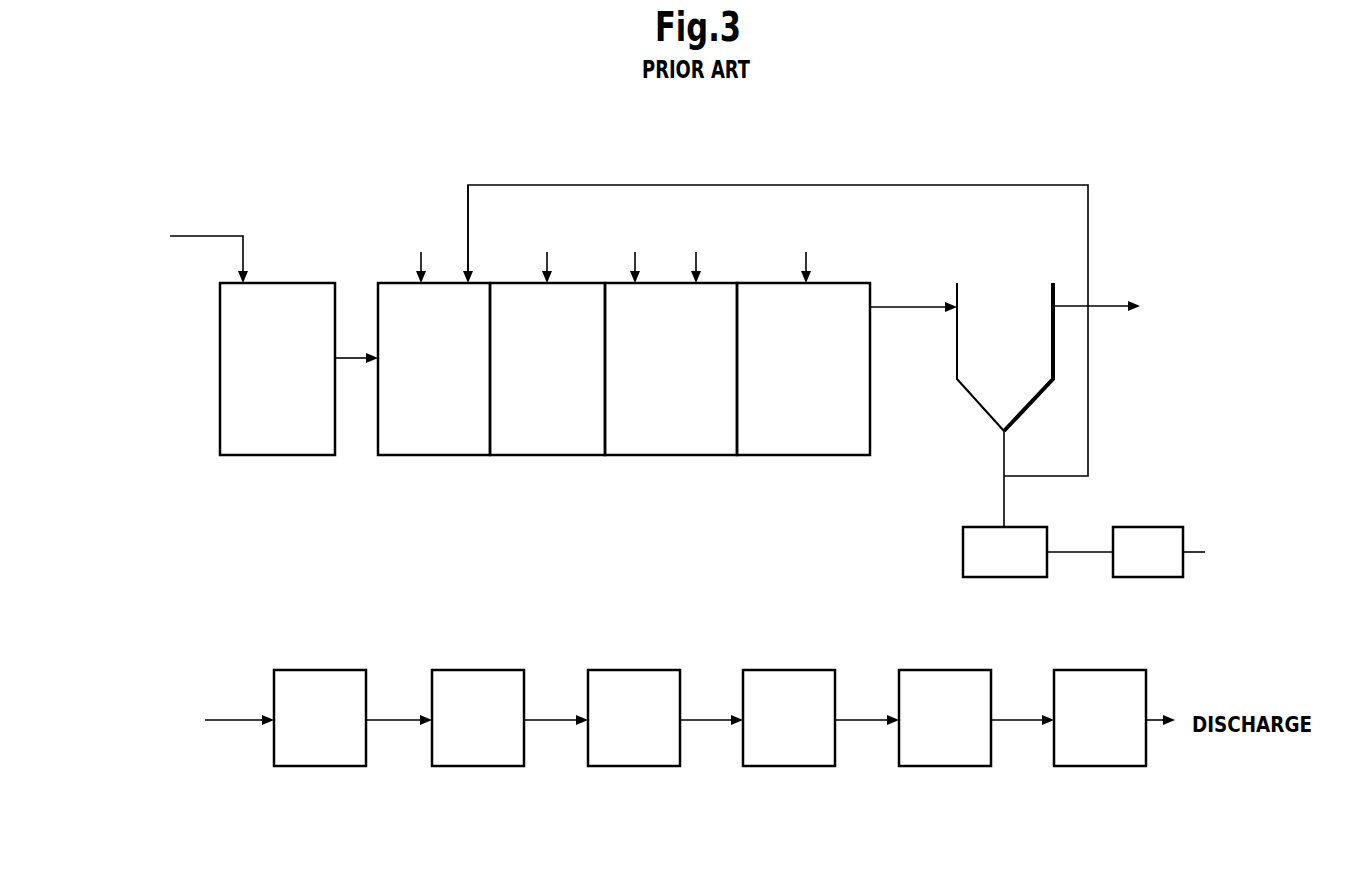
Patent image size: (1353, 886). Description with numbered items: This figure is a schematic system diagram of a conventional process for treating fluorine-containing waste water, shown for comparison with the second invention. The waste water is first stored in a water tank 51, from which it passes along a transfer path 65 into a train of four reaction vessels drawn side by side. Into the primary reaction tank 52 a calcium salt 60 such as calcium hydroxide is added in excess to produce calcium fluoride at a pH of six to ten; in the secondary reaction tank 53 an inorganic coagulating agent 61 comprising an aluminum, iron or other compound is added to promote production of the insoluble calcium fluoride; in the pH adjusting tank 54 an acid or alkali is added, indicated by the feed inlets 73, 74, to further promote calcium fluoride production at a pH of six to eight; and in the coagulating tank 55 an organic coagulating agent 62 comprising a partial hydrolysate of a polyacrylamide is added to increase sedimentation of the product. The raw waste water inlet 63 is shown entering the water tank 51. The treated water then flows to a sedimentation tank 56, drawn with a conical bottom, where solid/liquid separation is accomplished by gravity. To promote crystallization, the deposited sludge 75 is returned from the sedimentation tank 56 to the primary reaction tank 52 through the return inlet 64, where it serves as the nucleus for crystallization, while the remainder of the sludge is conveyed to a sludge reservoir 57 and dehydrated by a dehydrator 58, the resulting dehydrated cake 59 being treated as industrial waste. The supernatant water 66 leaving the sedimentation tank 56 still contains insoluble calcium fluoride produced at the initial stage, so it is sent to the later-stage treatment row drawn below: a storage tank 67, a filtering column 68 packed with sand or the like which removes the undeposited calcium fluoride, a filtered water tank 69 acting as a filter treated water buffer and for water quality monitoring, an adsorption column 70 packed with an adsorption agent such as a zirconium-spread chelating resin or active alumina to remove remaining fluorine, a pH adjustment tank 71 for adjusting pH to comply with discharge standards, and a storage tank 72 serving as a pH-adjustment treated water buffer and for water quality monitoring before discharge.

The water tank 51 is at (297, 455).
The primary reaction tank 52 is at (445, 455).
The secondary reaction tank 53 is at (557, 455).
The pH adjusting tank 54 is at (685, 455).
The coagulating tank 55 is at (798, 455).
The sedimentation tank 56 is at (957, 295).
The sludge reservoir 57 is at (985, 527).
The dehydrator 58 is at (1170, 527).
The dehydrated cake 59 is at (1210, 553).
The calcium salt 60 is at (421, 253).
The inorganic coagulating agent 61 is at (547, 253).
The organic coagulating agent 62 is at (806, 253).
The wastewater inlet line 63 is at (209, 243).
The recycle inlet 64 is at (605, 185).
The transfer line 65 is at (356, 344).
The treated water outlet 66 is at (689, 508).
The storage tank 67 is at (333, 766).
The filtering column 68 is at (467, 766).
The filtered water tank 69 is at (637, 766).
The adsorption column 70 is at (792, 766).
The pH adjustment tank 71 is at (950, 766).
The storage tank 72 is at (1100, 766).
The fourth chemical feed 73 is at (635, 253).
The fifth chemical feed 74 is at (696, 253).
The deposited sludge 75 is at (778, 306).